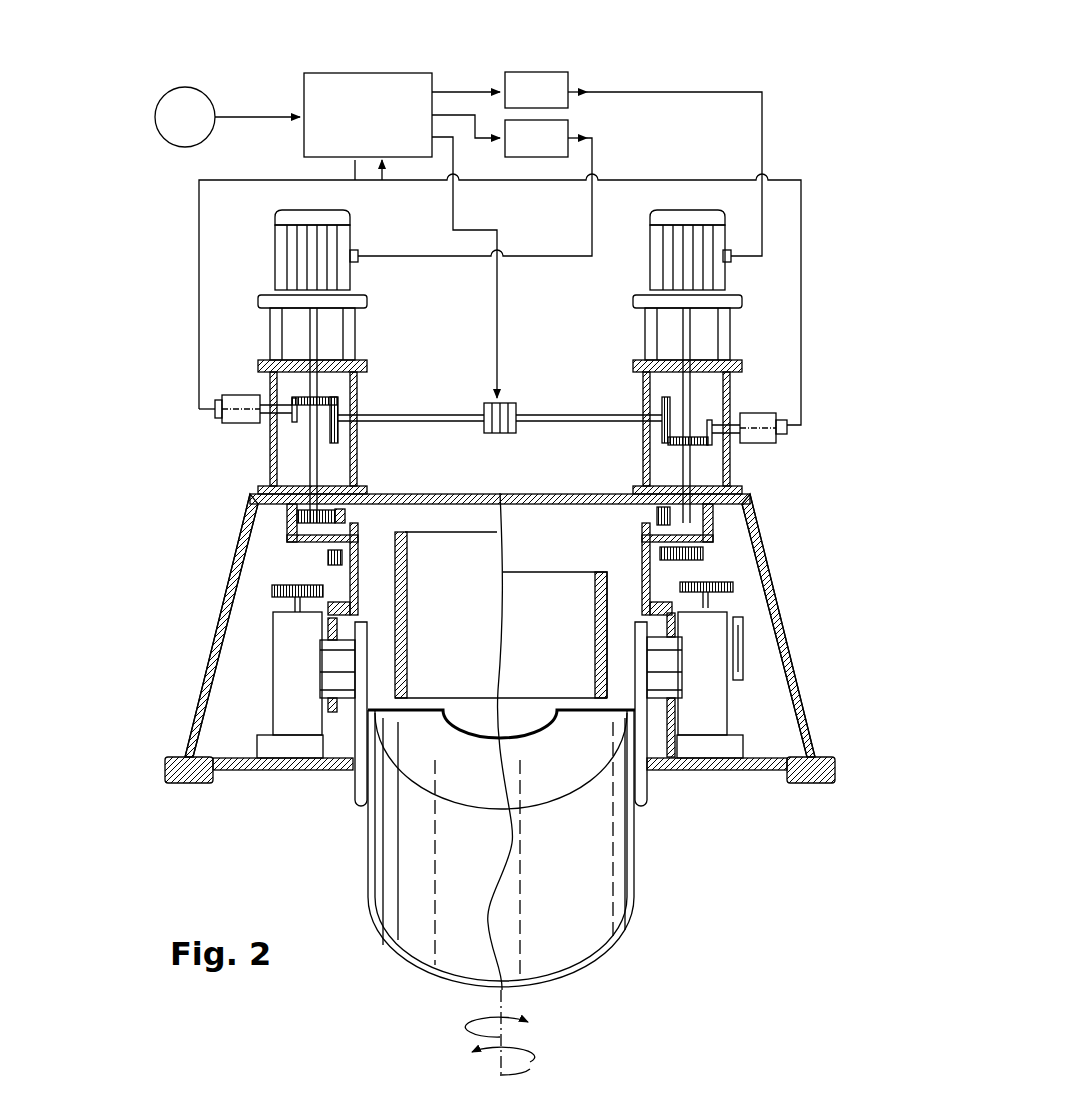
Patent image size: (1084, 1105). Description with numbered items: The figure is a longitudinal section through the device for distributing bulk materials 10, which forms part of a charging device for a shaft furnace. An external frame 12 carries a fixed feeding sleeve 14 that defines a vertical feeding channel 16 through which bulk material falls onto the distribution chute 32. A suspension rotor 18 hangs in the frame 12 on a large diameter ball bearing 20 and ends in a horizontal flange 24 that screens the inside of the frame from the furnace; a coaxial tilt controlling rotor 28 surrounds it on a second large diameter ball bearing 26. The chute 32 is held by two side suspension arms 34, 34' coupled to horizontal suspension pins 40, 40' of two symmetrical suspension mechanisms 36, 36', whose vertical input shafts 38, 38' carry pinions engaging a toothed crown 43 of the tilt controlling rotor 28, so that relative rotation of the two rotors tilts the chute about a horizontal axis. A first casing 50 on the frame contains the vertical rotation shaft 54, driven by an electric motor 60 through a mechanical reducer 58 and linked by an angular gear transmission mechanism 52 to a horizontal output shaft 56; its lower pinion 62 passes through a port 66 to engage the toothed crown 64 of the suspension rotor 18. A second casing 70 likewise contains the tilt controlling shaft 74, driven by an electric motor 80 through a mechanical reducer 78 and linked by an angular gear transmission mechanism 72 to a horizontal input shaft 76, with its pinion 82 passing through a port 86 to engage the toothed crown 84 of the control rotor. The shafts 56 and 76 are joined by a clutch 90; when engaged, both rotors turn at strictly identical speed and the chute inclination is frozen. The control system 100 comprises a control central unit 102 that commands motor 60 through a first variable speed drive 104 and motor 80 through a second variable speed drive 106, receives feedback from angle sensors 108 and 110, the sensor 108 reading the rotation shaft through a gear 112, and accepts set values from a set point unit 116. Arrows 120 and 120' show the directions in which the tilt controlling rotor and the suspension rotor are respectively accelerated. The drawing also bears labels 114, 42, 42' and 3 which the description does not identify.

The device for distributing bulk materials 10 is at (810, 83).
The control system 100 is at (204, 60).
The control central unit 102 is at (352, 87).
The first variable speed drive 104 is at (548, 128).
The second variable speed drive 106 is at (553, 83).
The set point unit 116 is at (178, 123).
The electric motor 60 is at (327, 277).
The electric motor 80 is at (663, 263).
The mechanical reducer 58 is at (338, 338).
The mechanical reducer 78 is at (658, 325).
The port 66 is at (275, 470).
The port 86 is at (700, 478).
The first casing 50 is at (252, 434).
The second casing 70 is at (746, 402).
The rotation shaft 54 is at (292, 455).
The angular gear transmission mechanism 52 is at (347, 458).
The angular gear transmission mechanism 72 is at (658, 450).
The tilt controlling shaft 74 is at (690, 457).
The horizontal output shaft 56 is at (422, 417).
The horizontal input shaft 76 is at (572, 417).
The clutch 90 is at (517, 399).
The angle sensor 108 is at (230, 419).
The angle sensor 110 is at (766, 440).
The gear 112 is at (285, 402).
The sensor shaft 114 is at (709, 420).
The large diameter ball bearing 20 is at (655, 507).
The external frame 12 is at (822, 738).
The horizontal flange 24 is at (280, 772).
The suspension mechanism 36 is at (181, 759).
The suspension mechanism 36' is at (843, 765).
The large diameter ball bearing 26 is at (300, 562).
The pinion 62 is at (288, 516).
The toothed crown 64 is at (713, 507).
The toothed crown 84 is at (324, 552).
The pinion 82 is at (708, 550).
The tilt controlling rotor 28 is at (275, 596).
The toothed crown 43 is at (735, 585).
The horizontal suspension pin 40 is at (205, 685).
The horizontal suspension pin 40' is at (788, 685).
The vertical input shaft 38 is at (212, 665).
The vertical input shaft 38' is at (783, 685).
The trunnion shaft 42 is at (221, 653).
The trunnion shaft 42' is at (773, 651).
The side suspension arm 34 is at (341, 732).
The side suspension arm 34' is at (665, 732).
The sensor 3 is at (754, 645).
The suspension rotor 18 is at (368, 600).
The fixed feeding sleeve 14 is at (402, 640).
The vertical feeding channel 16 is at (553, 642).
The distribution chute 32 is at (595, 887).
The arrow 120 is at (538, 1031).
The arrow 120' is at (545, 1063).